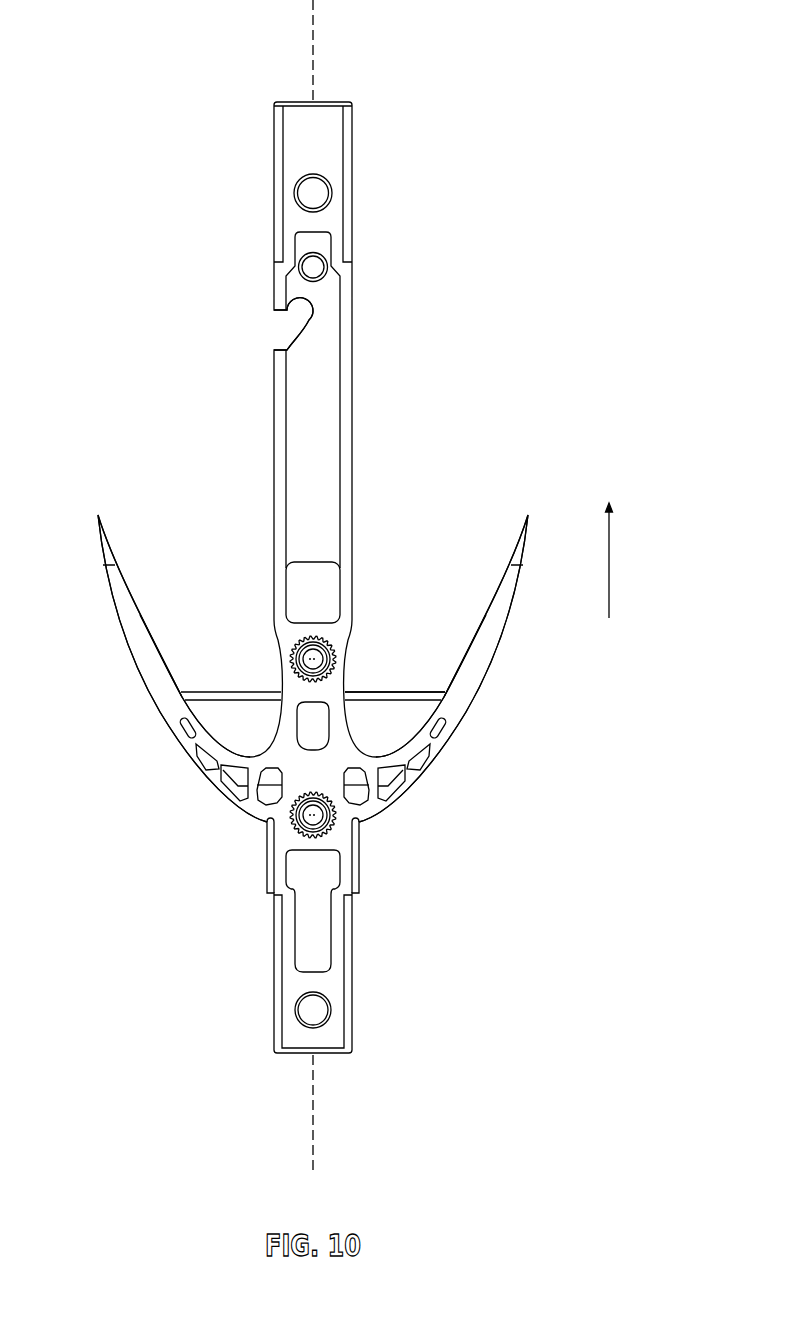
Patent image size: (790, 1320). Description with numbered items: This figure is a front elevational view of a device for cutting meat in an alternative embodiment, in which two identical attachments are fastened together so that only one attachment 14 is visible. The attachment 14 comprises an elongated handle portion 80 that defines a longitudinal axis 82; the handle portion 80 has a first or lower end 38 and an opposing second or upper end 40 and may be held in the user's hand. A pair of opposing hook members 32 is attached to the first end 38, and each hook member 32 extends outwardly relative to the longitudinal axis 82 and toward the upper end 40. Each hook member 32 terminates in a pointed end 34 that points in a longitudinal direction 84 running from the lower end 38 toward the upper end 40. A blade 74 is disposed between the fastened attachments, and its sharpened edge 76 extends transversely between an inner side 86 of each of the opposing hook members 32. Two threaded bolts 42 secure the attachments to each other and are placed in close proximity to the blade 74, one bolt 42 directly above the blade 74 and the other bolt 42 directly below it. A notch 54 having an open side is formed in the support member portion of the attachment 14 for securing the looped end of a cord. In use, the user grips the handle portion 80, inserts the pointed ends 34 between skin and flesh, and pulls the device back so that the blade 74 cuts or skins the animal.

The attachment 14 is at (313, 574).
The second end 40 is at (361, 95).
The first end 38 is at (362, 1050).
The notch 54 is at (280, 328).
The handle portion 80 is at (327, 413).
The hook member 32 is at (313, 631).
The pointed end 34 is at (95, 508).
The inner side 86 is at (172, 648).
The threaded bolt 42 is at (294, 655).
The blade 74 is at (232, 716).
The sharpened edge 76 is at (407, 680).
The longitudinal direction 84 is at (611, 558).
The longitudinal axis 82 is at (316, 1128).